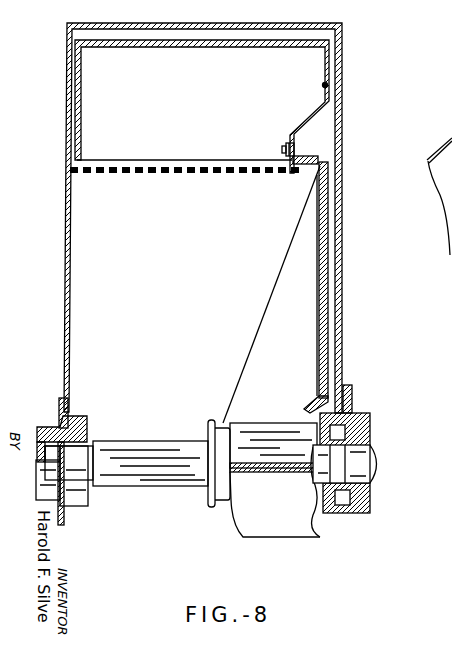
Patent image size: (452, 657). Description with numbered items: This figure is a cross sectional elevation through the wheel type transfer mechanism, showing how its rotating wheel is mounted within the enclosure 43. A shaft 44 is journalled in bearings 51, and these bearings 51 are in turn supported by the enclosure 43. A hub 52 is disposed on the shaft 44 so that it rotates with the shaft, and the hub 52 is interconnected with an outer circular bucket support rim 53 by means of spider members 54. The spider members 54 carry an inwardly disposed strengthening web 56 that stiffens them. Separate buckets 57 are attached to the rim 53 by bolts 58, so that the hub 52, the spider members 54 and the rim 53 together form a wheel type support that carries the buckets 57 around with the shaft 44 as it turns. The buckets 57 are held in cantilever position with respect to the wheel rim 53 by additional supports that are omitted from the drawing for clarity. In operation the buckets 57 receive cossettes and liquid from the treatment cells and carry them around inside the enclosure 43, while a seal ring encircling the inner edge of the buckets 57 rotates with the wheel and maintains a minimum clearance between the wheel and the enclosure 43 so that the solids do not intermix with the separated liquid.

The enclosure 43 is at (340, 287).
The shaft 44 is at (377, 447).
The bearings 51 is at (53, 427).
The hub 52 is at (222, 428).
The outer circular bucket support rim 53 is at (312, 157).
The spider members 54 is at (327, 256).
The strengthening web 56 is at (270, 324).
The buckets 57 is at (328, 85).
The bolts 58 is at (287, 146).